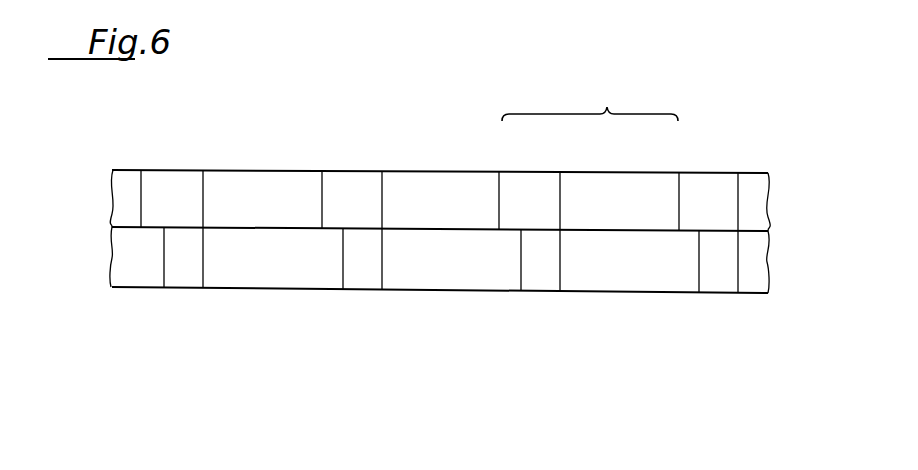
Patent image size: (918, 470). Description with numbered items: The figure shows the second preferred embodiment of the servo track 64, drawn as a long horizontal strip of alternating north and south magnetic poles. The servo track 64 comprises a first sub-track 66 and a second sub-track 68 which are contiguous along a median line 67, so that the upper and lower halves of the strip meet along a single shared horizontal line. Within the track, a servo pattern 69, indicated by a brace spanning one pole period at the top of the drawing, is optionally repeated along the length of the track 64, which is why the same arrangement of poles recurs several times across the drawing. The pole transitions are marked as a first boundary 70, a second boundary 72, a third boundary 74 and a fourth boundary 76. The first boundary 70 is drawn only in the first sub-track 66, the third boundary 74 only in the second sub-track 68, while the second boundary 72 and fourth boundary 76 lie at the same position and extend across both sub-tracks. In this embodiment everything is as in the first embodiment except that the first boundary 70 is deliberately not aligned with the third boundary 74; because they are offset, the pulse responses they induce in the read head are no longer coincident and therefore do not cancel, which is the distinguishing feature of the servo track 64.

The servo track 64 is at (92, 170).
The first sub-track 66 is at (760, 206).
The median line 67 is at (763, 233).
The second sub-track 68 is at (762, 270).
The servo pattern 69 is at (590, 99).
The first boundary 70 is at (141, 170).
The second boundary 72 is at (203, 170).
The third boundary 74 is at (164, 284).
The fourth boundary 76 is at (203, 284).